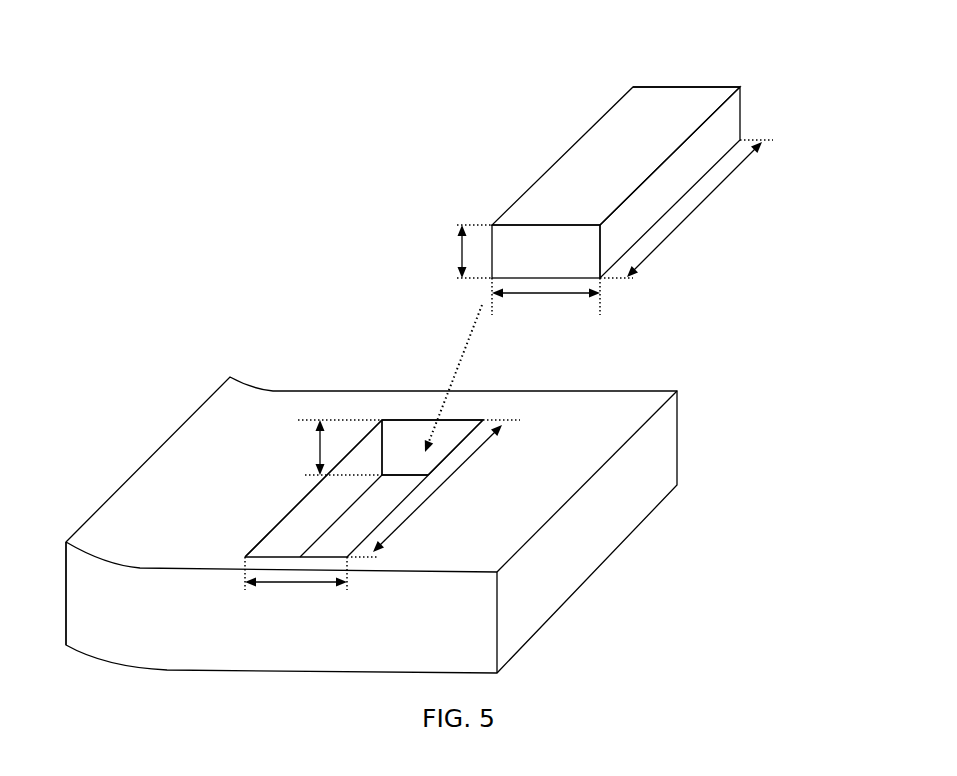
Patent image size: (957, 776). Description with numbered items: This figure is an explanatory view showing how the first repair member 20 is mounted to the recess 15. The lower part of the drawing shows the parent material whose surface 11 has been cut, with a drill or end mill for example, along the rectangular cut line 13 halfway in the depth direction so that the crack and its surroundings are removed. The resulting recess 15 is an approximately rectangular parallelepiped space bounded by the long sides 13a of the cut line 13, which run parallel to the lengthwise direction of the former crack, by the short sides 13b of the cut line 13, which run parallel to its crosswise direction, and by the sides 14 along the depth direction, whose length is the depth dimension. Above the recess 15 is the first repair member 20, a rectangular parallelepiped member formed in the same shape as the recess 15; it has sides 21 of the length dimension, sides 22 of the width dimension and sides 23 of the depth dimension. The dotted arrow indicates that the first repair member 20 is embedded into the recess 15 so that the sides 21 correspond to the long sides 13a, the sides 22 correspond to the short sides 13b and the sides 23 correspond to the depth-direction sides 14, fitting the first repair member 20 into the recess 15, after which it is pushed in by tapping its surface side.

The surface 11 is at (647, 400).
The cut line 13 is at (322, 441).
The long side of the cut line 13a is at (270, 531).
The short side of the cut line 13b is at (457, 418).
The side in the depth direction 14 is at (382, 447).
The recess 15 is at (409, 432).
The first repair member 20 is at (624, 166).
The sides having a length of L2 21 is at (562, 153).
The sides having a length of W2 22 is at (657, 87).
The sides having a length of D2 23 is at (740, 122).